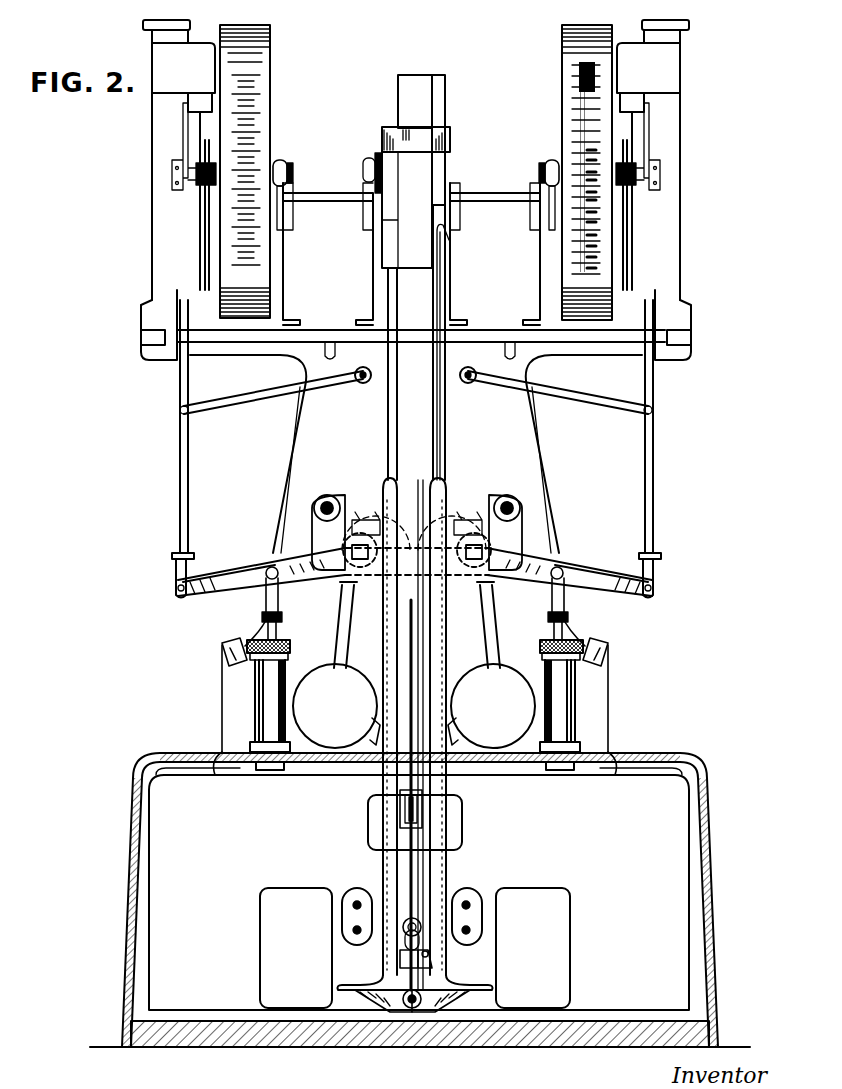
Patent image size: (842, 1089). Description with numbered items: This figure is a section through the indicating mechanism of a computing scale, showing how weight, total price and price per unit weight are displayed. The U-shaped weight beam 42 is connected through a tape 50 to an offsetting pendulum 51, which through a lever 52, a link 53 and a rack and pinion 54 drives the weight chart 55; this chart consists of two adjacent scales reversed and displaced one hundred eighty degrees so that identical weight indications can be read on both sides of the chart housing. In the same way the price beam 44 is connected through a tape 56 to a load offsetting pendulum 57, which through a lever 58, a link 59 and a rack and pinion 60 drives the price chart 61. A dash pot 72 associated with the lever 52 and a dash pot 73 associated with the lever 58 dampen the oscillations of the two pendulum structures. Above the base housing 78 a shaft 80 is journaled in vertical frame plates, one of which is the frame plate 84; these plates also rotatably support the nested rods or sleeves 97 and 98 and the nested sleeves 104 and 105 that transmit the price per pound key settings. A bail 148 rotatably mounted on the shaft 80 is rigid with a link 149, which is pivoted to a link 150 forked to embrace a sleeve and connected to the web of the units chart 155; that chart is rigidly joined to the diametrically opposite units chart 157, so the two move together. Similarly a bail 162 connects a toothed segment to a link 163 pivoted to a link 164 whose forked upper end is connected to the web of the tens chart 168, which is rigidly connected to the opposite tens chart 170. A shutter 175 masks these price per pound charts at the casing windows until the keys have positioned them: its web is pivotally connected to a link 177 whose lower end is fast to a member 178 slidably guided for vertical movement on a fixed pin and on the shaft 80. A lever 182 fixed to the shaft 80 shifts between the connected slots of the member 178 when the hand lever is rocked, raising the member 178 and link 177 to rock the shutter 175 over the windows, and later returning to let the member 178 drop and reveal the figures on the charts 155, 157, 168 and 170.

The weight beam 42 is at (400, 812).
The price beam 44 is at (416, 804).
The tape 50 is at (398, 618).
The offsetting pendulum 51 is at (320, 678).
The lever 52 is at (222, 577).
The link 53 is at (188, 448).
The rack and pinion 54 is at (205, 190).
The weight chart 55 is at (258, 43).
The tape 56 is at (430, 618).
The load offsetting pendulum 57 is at (497, 678).
The lever 58 is at (590, 572).
The link 59 is at (652, 452).
The rack and pinion 60 is at (627, 232).
The price chart 61 is at (572, 45).
The dash pot 72 is at (262, 698).
The dash pot 73 is at (562, 698).
The base housing 78 is at (692, 768).
The shaft 80 is at (412, 1008).
The frame plate 84 is at (660, 940).
The nested rods or sleeves 97 is at (470, 905).
The nested rods or sleeves 98 is at (470, 930).
The nested sleeves or rods 104 is at (352, 905).
The nested sleeves or rods 105 is at (352, 930).
The bail 148 is at (432, 1012).
The link 149 is at (352, 996).
The link 150 is at (388, 421).
The units chart 155 is at (416, 75).
The units chart 157 is at (415, 262).
The bail 162 is at (395, 1012).
The link 163 is at (478, 996).
The link 164 is at (444, 437).
The tens chart 168 is at (440, 92).
The tens chart 170 is at (374, 163).
The shutter 175 is at (446, 140).
The link 177 is at (449, 238).
The member 178 is at (398, 940).
The lever 182 is at (430, 962).